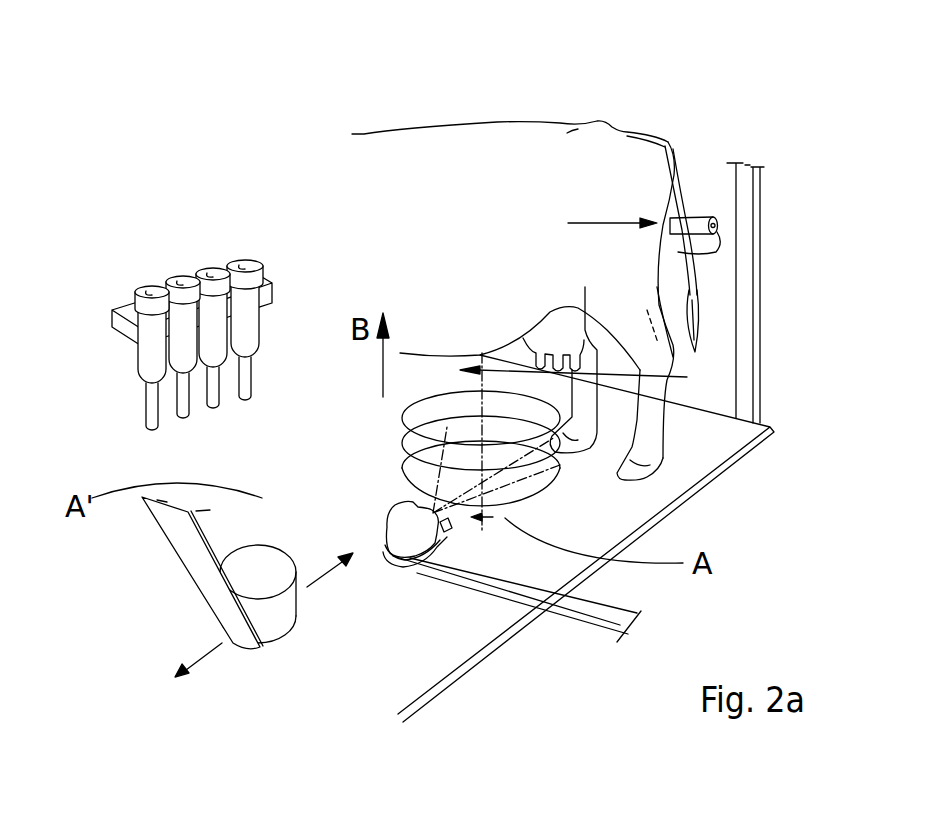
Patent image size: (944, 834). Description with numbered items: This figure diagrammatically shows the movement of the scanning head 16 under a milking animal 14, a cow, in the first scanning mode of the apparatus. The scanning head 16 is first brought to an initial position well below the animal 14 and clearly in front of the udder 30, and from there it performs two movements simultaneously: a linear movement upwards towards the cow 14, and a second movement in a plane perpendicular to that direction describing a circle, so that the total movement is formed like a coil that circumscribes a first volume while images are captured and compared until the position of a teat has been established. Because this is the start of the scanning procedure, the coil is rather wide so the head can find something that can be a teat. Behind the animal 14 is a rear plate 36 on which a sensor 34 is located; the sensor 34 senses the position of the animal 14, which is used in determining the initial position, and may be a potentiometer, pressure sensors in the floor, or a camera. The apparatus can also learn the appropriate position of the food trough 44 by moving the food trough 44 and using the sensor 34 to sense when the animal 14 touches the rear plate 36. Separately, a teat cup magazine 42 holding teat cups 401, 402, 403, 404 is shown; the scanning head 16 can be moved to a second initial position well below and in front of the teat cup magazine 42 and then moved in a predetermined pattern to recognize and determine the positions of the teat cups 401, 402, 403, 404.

The animal 14 is at (497, 120).
The scanning head 16 is at (402, 523).
The udder 30 is at (593, 378).
The sensor 34 is at (717, 226).
The rear plate 36 is at (698, 207).
The teat cup 401 is at (150, 362).
The teat cup 402 is at (185, 363).
The teat cup 403 is at (218, 357).
The teat cup 404 is at (258, 328).
The teat cup magazine 42 is at (123, 330).
The food trough 44 is at (273, 630).